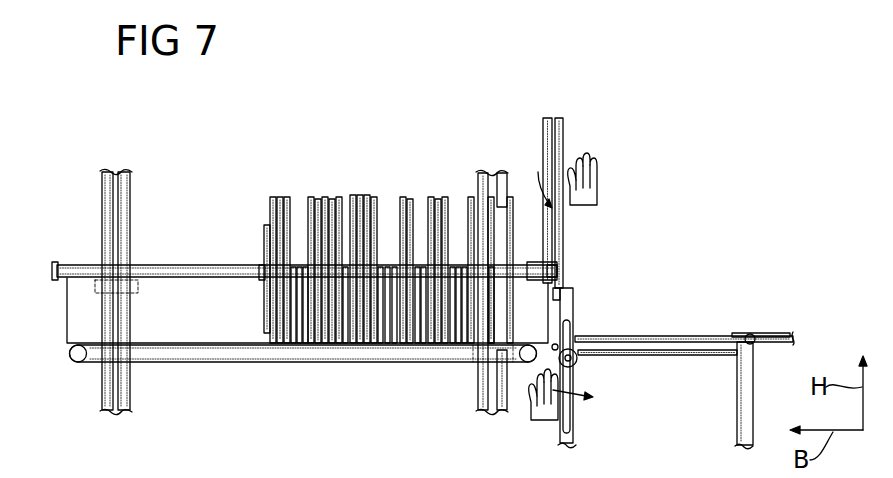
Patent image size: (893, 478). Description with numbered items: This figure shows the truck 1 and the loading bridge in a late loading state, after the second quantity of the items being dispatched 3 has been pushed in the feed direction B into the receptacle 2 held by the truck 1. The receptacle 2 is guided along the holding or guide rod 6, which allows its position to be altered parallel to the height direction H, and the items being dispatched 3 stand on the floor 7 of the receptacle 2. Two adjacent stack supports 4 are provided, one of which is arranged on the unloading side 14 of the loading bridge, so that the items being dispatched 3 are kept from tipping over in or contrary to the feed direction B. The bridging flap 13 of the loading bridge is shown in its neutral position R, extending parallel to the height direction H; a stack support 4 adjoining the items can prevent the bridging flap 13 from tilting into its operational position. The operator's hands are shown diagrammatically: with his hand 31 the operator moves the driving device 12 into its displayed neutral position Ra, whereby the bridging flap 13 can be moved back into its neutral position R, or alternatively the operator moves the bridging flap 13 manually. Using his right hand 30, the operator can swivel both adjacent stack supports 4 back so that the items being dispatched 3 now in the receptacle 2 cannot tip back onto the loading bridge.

The truck 1 is at (72, 188).
The receptacle 2 is at (250, 199).
The item being dispatched 3 is at (355, 192).
The stack support 4 is at (264, 240).
The holding or guide rod 6 is at (118, 182).
The floor 7 is at (194, 343).
The driving device 12 is at (578, 364).
The bridging flap 13 is at (563, 320).
The unloading side 14 is at (572, 272).
The right hand 30 is at (596, 196).
The hand 31 is at (527, 410).